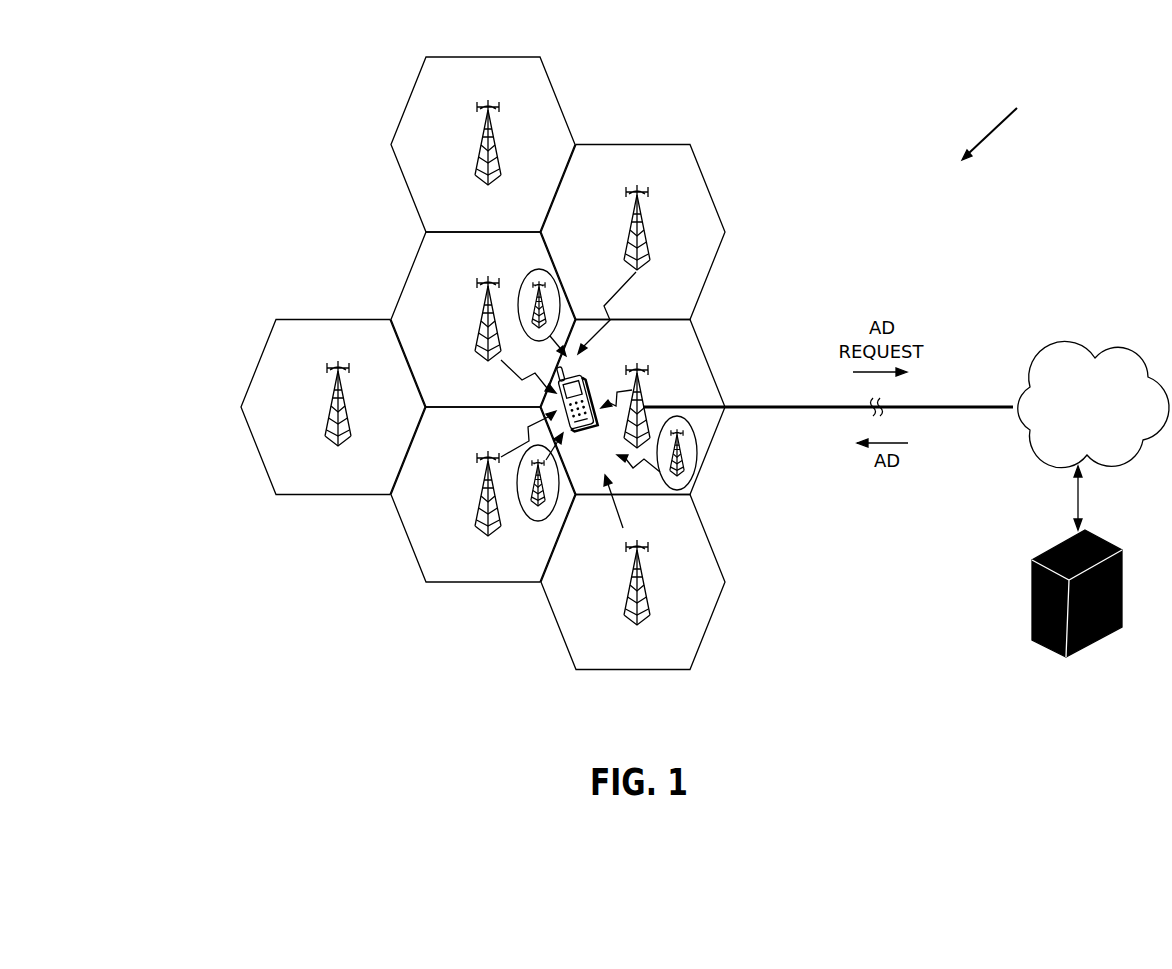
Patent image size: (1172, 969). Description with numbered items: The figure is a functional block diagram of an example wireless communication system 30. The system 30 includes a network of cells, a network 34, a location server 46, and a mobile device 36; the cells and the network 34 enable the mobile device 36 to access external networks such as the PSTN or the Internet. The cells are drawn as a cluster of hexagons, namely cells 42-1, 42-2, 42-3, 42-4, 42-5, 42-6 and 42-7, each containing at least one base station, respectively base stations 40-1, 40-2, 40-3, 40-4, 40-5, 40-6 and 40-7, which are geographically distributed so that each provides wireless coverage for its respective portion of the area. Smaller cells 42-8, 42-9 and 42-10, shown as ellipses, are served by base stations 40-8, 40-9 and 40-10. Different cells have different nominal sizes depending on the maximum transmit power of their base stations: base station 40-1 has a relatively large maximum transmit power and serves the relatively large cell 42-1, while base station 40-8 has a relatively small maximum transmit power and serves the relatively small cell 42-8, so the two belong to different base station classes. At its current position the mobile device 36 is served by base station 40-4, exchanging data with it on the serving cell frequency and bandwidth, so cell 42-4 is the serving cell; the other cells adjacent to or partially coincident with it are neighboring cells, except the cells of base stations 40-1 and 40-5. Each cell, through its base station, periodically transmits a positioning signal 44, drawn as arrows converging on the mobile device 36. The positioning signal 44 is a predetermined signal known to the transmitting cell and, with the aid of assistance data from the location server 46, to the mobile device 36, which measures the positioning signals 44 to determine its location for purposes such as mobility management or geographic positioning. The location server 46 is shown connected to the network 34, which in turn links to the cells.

The wireless communication system 30 is at (1000, 124).
The network 34 is at (1083, 437).
The mobile device 36 is at (568, 443).
The base station 40-1 is at (492, 104).
The base station 40-2 is at (640, 188).
The base station 40-3 is at (492, 280).
The base station 40-4 is at (632, 362).
The base station 40-5 is at (342, 365).
The base station 40-6 is at (492, 455).
The base station 40-7 is at (650, 553).
The base station 40-8 is at (556, 305).
The base station 40-9 is at (682, 440).
The base station 40-10 is at (534, 506).
The cell 42-1 is at (410, 107).
The cell 42-2 is at (705, 177).
The cell 42-3 is at (412, 270).
The cell 42-4 is at (699, 340).
The cell 42-5 is at (262, 462).
The cell 42-6 is at (410, 540).
The cell 42-7 is at (577, 636).
The cell 42-8 is at (559, 305).
The cell 42-9 is at (698, 450).
The cell 42-10 is at (545, 522).
The positioning signal 44 is at (612, 303).
The location server 46 is at (1082, 650).